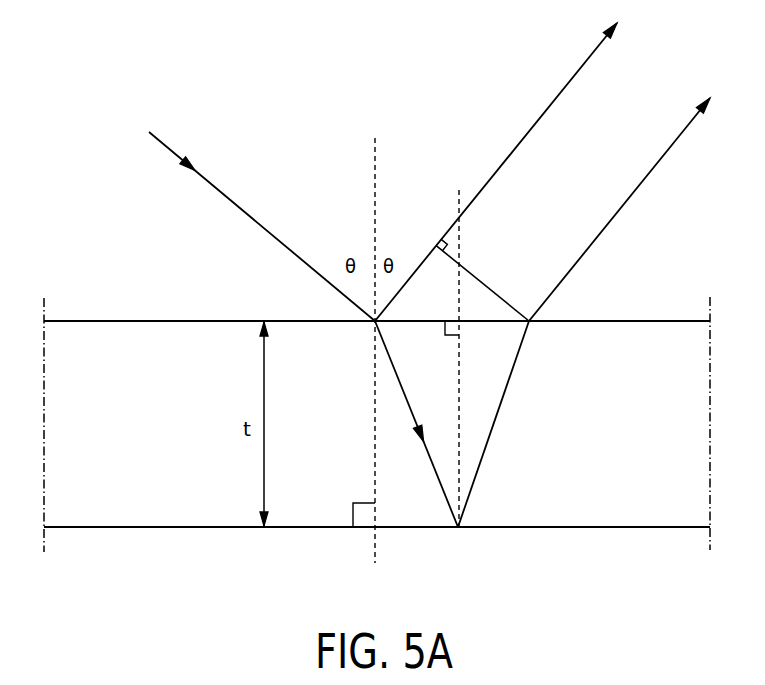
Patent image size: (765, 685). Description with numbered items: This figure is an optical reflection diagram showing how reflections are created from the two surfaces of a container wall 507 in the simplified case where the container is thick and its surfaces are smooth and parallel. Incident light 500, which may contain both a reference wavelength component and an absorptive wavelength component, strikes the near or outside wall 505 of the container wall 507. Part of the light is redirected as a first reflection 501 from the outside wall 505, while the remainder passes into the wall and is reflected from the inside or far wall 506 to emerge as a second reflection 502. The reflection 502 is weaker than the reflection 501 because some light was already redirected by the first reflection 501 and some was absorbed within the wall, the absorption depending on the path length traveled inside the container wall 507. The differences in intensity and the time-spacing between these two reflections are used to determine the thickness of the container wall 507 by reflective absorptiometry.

The incident light 500 is at (227, 197).
The reflection from outside wall 501 is at (517, 147).
The reflection from inside wall 502 is at (610, 220).
The outside wall 505 is at (135, 320).
The inside wall 506 is at (157, 528).
The container wall 507 is at (615, 497).